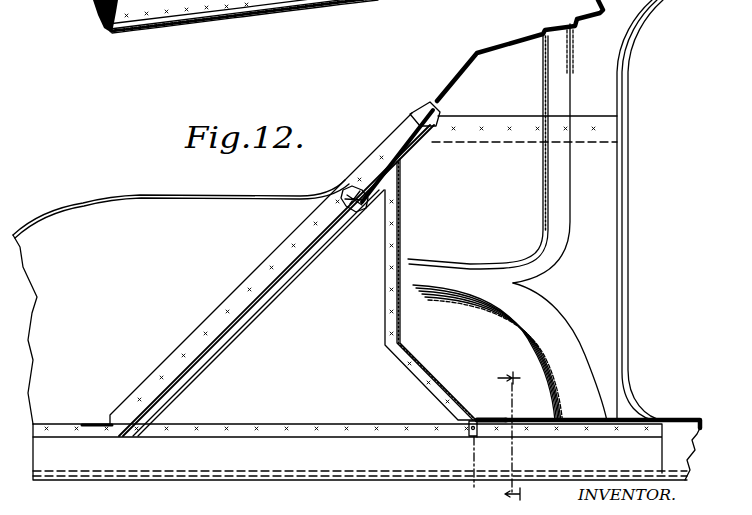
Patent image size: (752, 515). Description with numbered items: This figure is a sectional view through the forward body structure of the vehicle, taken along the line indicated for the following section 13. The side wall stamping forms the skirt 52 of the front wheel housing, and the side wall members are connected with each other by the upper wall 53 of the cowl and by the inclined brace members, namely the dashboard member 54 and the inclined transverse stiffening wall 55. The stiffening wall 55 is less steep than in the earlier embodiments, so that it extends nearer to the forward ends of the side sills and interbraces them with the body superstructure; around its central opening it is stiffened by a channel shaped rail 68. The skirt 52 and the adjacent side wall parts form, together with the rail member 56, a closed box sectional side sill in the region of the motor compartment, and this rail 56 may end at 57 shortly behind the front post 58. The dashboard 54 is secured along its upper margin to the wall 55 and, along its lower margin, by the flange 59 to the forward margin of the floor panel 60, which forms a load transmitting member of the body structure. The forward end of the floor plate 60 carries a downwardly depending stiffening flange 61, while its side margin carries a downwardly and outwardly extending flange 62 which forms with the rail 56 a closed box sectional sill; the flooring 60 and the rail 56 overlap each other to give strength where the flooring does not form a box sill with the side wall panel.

The skirt 52 is at (84, 219).
The upper wall of the cowl 53 is at (486, 52).
The dashboard member 54 is at (398, 225).
The inclined transverse stiffening wall 55 is at (410, 137).
The rail member 56 is at (75, 452).
The end of rail 57 is at (665, 436).
The front post 58 is at (614, 298).
The flange 59 is at (476, 418).
The floor panel 60 is at (556, 419).
The stiffening flange 61 is at (470, 432).
The side flange 62 is at (681, 456).
The channel shaped rail 68 is at (362, 206).
The section line 13- 13 is at (497, 438).